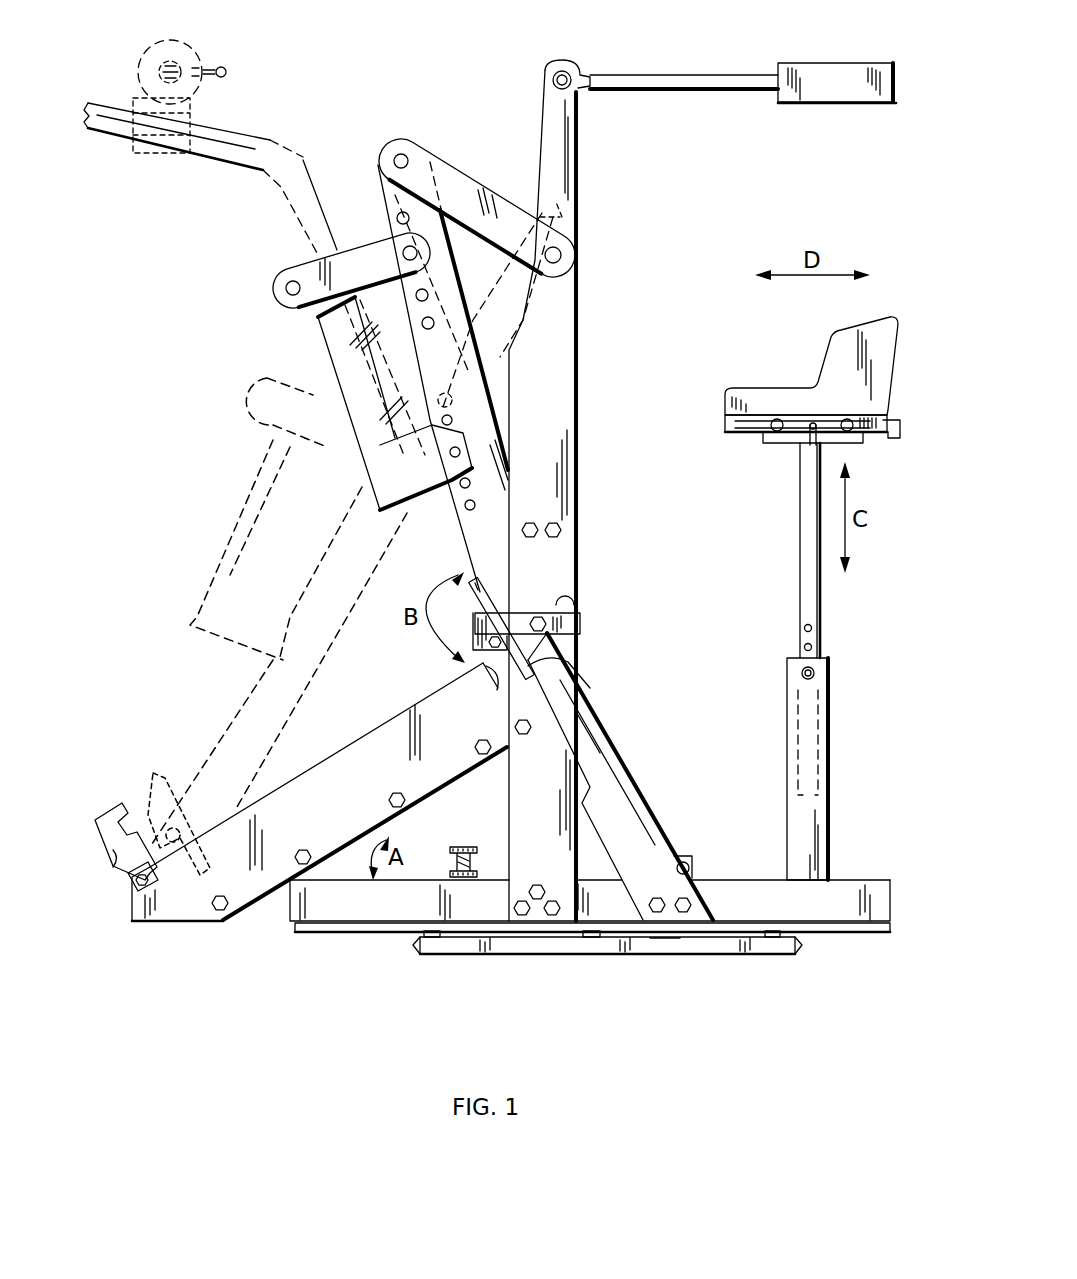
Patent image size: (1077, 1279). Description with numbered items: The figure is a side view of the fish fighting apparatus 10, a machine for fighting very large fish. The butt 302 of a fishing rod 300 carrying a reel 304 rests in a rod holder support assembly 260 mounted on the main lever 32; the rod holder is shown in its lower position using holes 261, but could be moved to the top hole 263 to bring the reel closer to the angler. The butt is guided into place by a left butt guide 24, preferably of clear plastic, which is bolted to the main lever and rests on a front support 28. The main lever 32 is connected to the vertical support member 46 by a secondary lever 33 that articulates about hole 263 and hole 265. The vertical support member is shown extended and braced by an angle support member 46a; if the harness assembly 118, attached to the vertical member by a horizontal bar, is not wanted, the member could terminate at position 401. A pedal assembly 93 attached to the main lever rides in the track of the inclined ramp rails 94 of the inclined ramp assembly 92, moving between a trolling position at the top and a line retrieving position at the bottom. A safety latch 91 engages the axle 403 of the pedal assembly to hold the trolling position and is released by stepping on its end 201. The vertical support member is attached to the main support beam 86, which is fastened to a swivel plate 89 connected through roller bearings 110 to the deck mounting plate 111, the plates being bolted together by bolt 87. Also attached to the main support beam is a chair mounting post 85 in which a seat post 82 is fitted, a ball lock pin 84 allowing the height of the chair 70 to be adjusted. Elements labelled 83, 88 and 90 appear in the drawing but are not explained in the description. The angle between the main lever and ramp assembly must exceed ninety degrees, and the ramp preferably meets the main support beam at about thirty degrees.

The fish fighting apparatus 10 is at (700, 321).
The left butt guide 24 is at (410, 358).
The front support 28 is at (312, 332).
The main lever 32 is at (472, 610).
The secondary lever 33 is at (467, 187).
The vertical support member 46 is at (557, 453).
The angle support member 46a is at (591, 752).
The chair 70 is at (900, 395).
The seat post 82 is at (823, 613).
The seat post 83 is at (799, 517).
The ball lock pin 84 is at (815, 673).
The chair mounting post 85 is at (830, 830).
The main support beam 86 is at (857, 893).
The bolt 87 is at (688, 862).
The bolt 88 is at (452, 852).
The swivel plate 89 is at (868, 928).
The beam 90 is at (765, 956).
The safety latch 91 is at (566, 598).
The inclined ramp assembly 92 is at (172, 908).
The pedal assembly 93 is at (573, 678).
The inclined ramp rails 94 is at (377, 752).
The roller bearings 110 is at (443, 935).
The deck mounting plate 111 is at (568, 70).
The harness assembly 118 is at (812, 62).
The end 201 is at (582, 625).
The rod holder support assembly 260 is at (282, 292).
The holes 261 is at (405, 255).
The top hole 263 is at (400, 155).
The hole 265 is at (560, 262).
The fishing rod 300 is at (230, 130).
The butt 302 is at (305, 158).
The reel 304 is at (198, 50).
The position 401 is at (580, 197).
The axle 403 is at (497, 690).